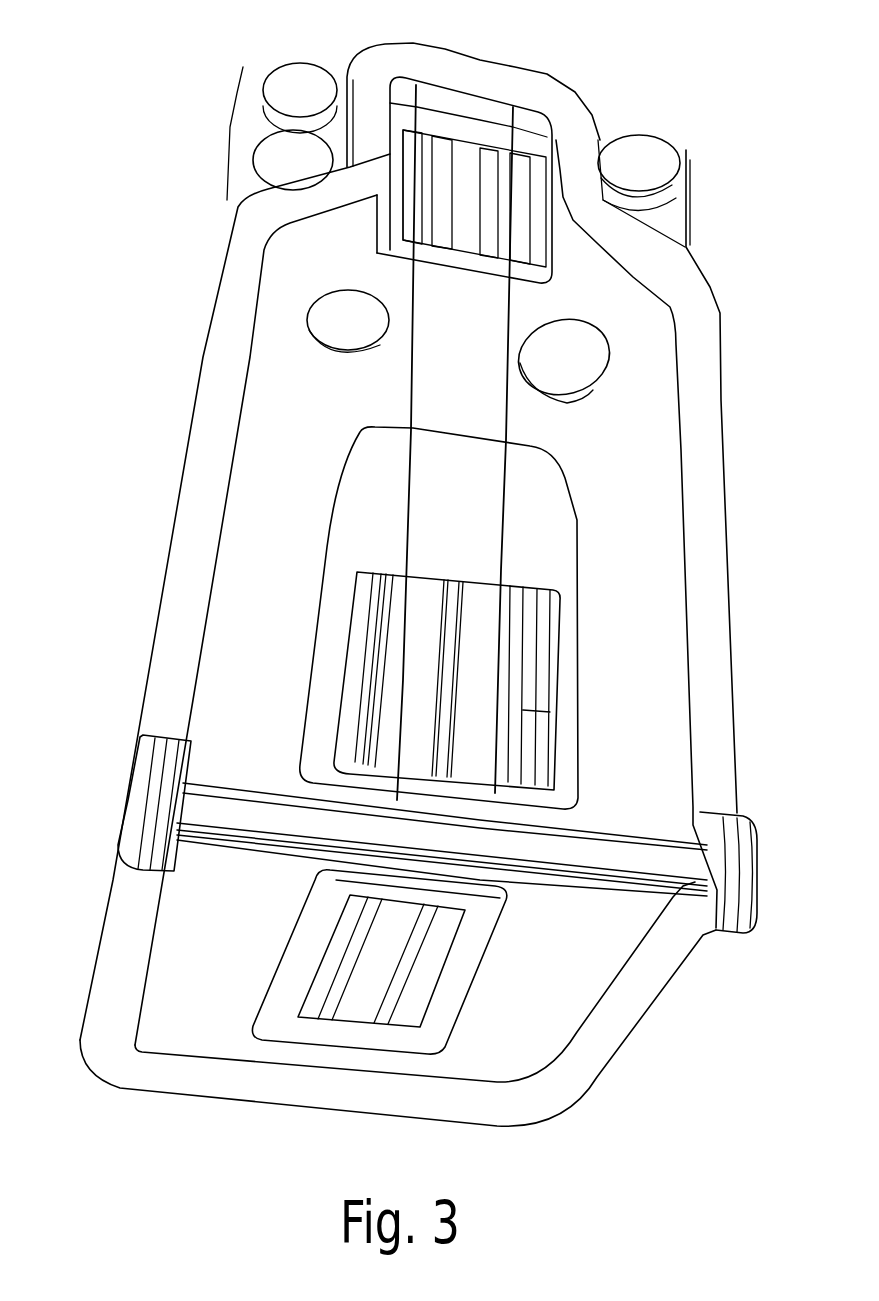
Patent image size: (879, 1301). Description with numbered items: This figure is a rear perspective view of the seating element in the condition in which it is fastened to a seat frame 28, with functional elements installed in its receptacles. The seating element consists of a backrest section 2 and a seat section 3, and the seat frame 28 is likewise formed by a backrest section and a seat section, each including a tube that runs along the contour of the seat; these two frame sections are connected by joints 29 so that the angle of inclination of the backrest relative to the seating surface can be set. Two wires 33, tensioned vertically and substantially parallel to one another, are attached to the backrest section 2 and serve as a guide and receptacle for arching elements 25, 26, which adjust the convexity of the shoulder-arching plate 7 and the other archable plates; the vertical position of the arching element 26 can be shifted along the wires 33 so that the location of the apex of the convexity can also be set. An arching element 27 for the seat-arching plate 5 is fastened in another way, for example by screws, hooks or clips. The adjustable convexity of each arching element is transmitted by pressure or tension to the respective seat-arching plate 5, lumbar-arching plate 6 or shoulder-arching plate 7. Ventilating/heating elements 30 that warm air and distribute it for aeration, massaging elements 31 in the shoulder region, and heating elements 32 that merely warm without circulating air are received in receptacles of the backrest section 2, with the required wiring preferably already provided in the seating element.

The backrest section 2 is at (660, 580).
The seat section 3 is at (590, 957).
The seat-arching plate 5 is at (290, 940).
The lumbar-arching plate 6 is at (588, 533).
The shoulder-arching plate 7 is at (560, 253).
The arching element 25 is at (473, 137).
The arching element 26 is at (573, 717).
The arching element 27 is at (453, 973).
The seat frame 28 is at (105, 950).
The joints 29 is at (133, 778).
The functional elements 30 is at (343, 307).
The massaging elements 31 is at (233, 135).
The heating elements 32 is at (248, 68).
The wires 33 is at (410, 382).